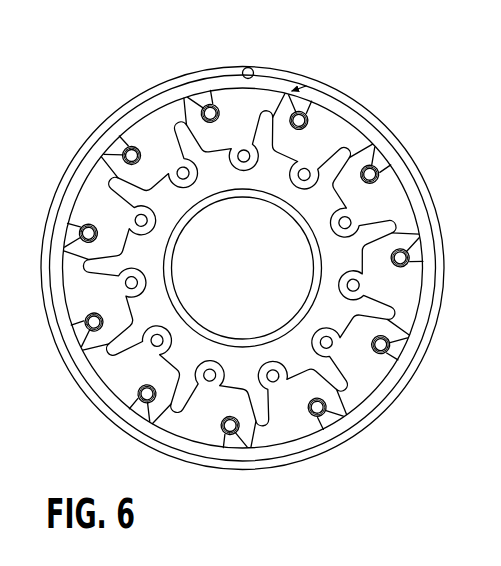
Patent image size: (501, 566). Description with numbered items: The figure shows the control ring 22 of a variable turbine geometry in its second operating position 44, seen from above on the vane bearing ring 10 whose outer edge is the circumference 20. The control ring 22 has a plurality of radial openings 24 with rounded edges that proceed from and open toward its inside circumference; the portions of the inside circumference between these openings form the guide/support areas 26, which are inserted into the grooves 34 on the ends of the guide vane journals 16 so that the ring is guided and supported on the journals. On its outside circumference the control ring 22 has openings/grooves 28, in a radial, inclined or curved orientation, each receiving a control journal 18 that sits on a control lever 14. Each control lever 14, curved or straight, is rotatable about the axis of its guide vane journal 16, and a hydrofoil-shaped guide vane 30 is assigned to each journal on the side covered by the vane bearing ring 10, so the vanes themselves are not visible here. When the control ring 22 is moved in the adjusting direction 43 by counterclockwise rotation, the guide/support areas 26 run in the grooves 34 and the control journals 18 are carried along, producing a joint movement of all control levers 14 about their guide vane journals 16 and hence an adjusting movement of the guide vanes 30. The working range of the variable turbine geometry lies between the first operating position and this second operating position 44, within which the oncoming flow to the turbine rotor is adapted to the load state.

The vane bearing ring 10 is at (384, 157).
The control lever 14 is at (314, 332).
The guide vane journal 16 is at (321, 177).
The control journal 18 is at (311, 418).
The circumference of the vane bearing ring 20 is at (360, 433).
The control ring 22 is at (411, 204).
The radial opening 24 is at (182, 128).
The guide/support area 26 is at (144, 296).
The opening/groove 28 is at (118, 150).
The guide vane 30 is at (500, 478).
The groove 34 is at (374, 167).
The adjusting direction 43 is at (304, 94).
The second operating position 44 is at (390, 92).